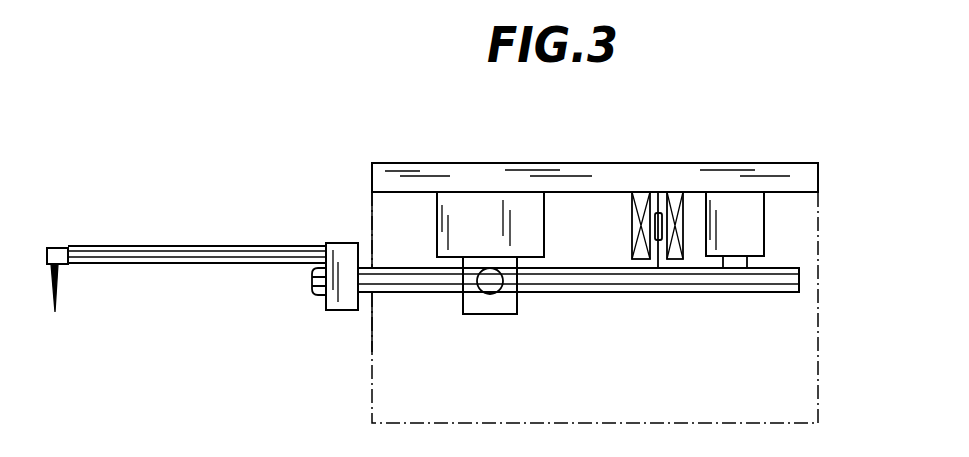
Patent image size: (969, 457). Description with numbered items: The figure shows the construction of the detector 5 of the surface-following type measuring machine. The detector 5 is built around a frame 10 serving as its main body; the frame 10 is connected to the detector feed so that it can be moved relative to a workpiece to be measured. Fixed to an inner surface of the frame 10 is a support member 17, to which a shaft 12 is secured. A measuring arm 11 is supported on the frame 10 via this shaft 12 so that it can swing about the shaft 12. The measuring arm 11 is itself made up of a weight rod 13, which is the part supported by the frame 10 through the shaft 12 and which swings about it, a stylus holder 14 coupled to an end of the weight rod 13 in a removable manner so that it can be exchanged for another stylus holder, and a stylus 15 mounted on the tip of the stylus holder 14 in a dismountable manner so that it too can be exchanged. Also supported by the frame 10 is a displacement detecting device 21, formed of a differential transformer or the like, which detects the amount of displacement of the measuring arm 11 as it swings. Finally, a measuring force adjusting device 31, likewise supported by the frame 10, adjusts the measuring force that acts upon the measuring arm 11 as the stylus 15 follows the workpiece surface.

The detector 5 is at (797, 142).
The frame 10 is at (567, 163).
The measuring arm 11 is at (403, 292).
The shaft 12 is at (493, 286).
The weight rod 13 is at (582, 290).
The stylus holder 14 is at (190, 264).
The stylus 15 is at (58, 290).
The support member 17 is at (467, 202).
The displacement detecting device 21 is at (660, 200).
The measuring force adjusting device 31 is at (764, 233).